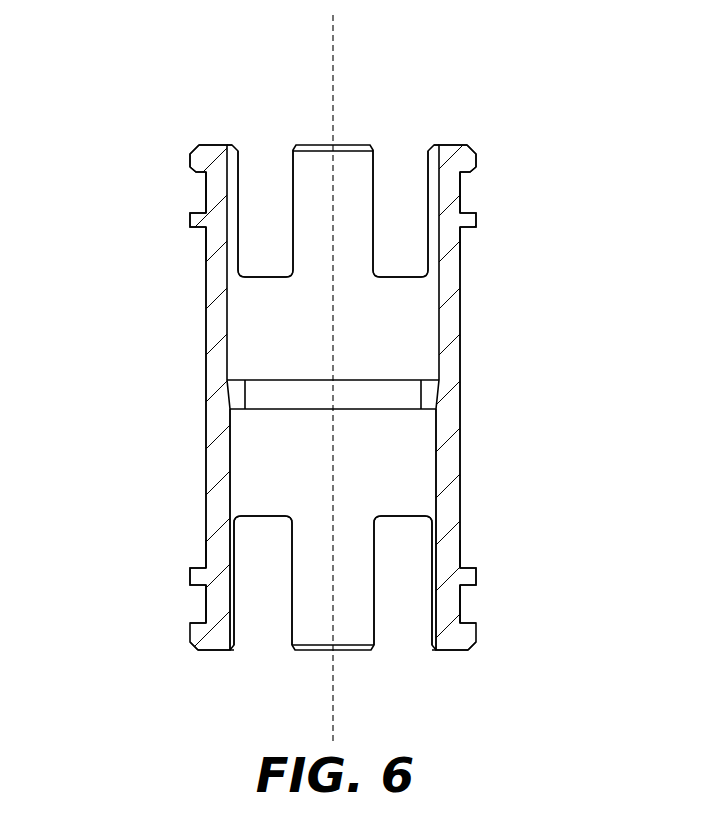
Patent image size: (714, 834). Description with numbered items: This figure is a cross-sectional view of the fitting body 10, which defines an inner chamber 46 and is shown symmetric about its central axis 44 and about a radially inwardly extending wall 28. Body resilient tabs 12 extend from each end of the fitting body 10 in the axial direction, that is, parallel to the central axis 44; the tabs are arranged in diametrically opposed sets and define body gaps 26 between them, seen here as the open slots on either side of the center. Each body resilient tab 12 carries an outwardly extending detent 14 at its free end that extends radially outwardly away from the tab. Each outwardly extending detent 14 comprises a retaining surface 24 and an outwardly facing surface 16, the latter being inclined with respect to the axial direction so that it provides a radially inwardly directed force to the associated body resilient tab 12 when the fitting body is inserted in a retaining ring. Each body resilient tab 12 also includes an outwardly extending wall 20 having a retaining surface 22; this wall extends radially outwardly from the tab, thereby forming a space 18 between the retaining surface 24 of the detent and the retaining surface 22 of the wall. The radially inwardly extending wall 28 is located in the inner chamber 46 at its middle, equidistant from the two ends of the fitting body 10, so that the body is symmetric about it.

The fitting body 10 is at (181, 402).
The body resilient tabs 12 is at (212, 243).
The outwardly extending detent 14 is at (225, 146).
The outwardly facing surface 16 is at (193, 155).
The space 18 is at (204, 194).
The outwardly extending wall 20 is at (197, 229).
The retaining surface 22 is at (189, 220).
The retaining surface 24 is at (186, 176).
The body gaps 26 is at (266, 257).
The radially inwardly extending wall 28 is at (400, 393).
The central axis 44 is at (333, 46).
The inner chamber 46 is at (249, 479).